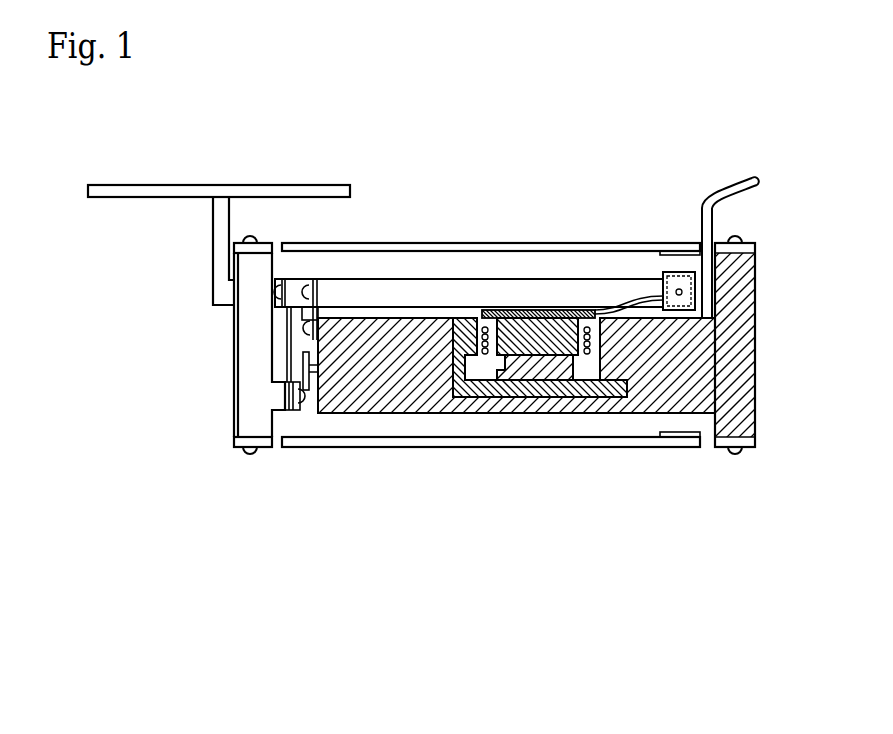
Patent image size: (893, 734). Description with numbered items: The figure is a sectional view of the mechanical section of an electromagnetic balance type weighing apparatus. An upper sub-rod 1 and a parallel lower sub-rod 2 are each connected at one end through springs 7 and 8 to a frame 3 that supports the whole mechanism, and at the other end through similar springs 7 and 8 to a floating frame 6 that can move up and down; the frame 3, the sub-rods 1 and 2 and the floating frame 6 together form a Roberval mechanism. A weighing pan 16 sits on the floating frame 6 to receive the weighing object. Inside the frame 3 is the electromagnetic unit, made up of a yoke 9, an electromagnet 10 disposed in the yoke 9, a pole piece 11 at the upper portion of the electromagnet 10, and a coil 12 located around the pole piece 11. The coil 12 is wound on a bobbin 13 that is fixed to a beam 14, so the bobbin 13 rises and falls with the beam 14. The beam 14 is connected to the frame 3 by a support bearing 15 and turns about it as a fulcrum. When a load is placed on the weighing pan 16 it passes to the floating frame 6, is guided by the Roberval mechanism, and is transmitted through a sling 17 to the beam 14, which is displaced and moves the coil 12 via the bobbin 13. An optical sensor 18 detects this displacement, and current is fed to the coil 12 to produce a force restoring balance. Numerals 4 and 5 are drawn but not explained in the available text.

The upper sub-rod 1 is at (378, 243).
The lower sub-rod 2 is at (447, 447).
The frame 3 is at (757, 348).
The cable 4 is at (705, 250).
The bottom plate end portion 5 is at (705, 447).
The floating frame 6 is at (240, 352).
The spring 7 is at (282, 250).
The spring 8 is at (277, 447).
The yoke 9 is at (613, 400).
The electromagnet 10 is at (538, 397).
The pole piece 11 is at (497, 310).
The coil 12 is at (597, 380).
The bobbin 13 is at (552, 318).
The beam 14 is at (437, 285).
The support bearing 15 is at (290, 308).
The weighing pan 16 is at (157, 185).
The sling 17 is at (288, 362).
The optical sensor 18 is at (668, 292).